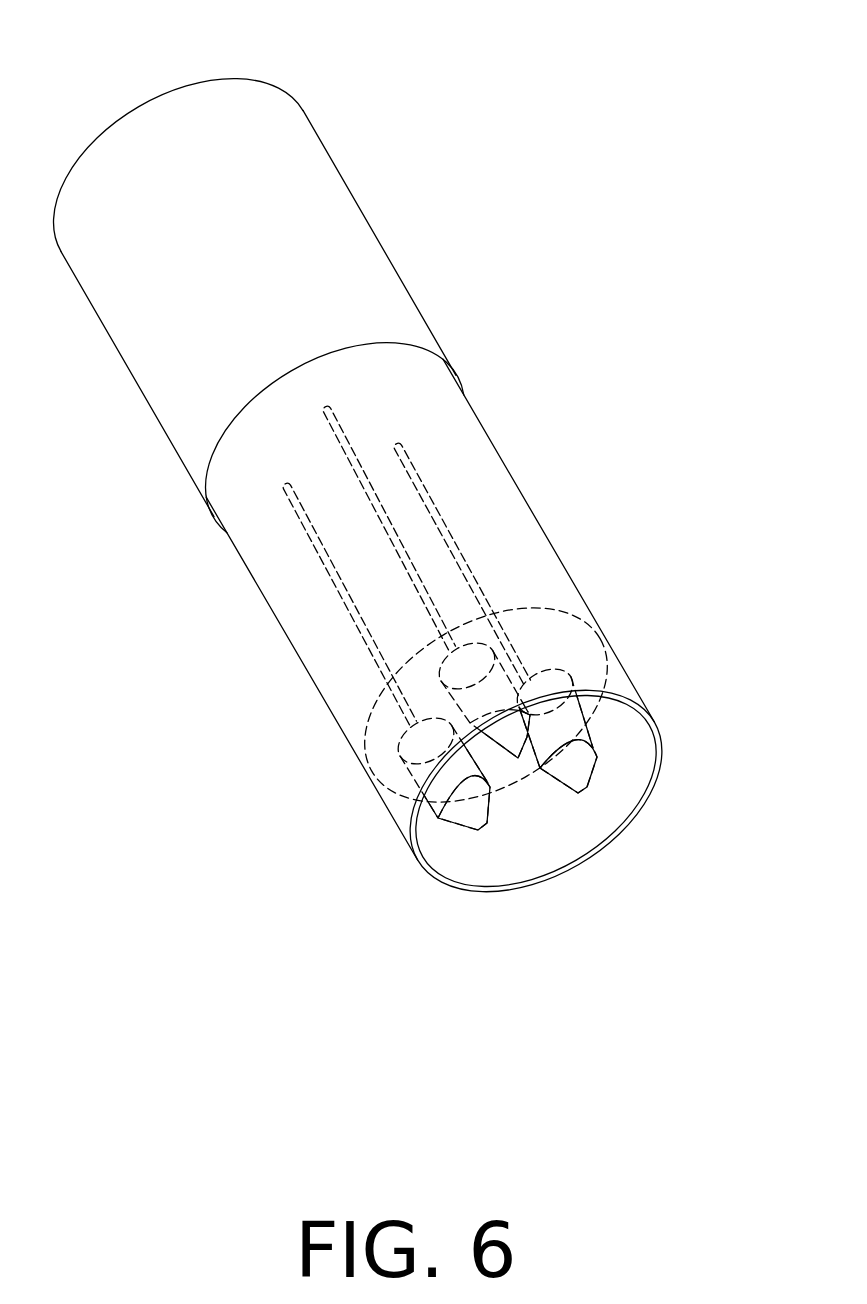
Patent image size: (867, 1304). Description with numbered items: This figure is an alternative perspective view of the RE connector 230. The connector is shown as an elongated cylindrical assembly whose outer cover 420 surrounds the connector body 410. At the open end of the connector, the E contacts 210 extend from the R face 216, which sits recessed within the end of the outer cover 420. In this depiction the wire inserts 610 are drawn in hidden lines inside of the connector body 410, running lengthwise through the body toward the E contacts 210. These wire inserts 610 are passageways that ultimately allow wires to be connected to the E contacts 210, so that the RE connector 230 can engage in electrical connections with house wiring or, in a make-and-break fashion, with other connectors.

The RE connector 230 is at (405, 547).
The outer cover 420 is at (287, 157).
The connector body 410 is at (328, 670).
The R face 216 is at (508, 770).
The wire inserts 610 is at (425, 497).
The E contacts 210 is at (580, 777).